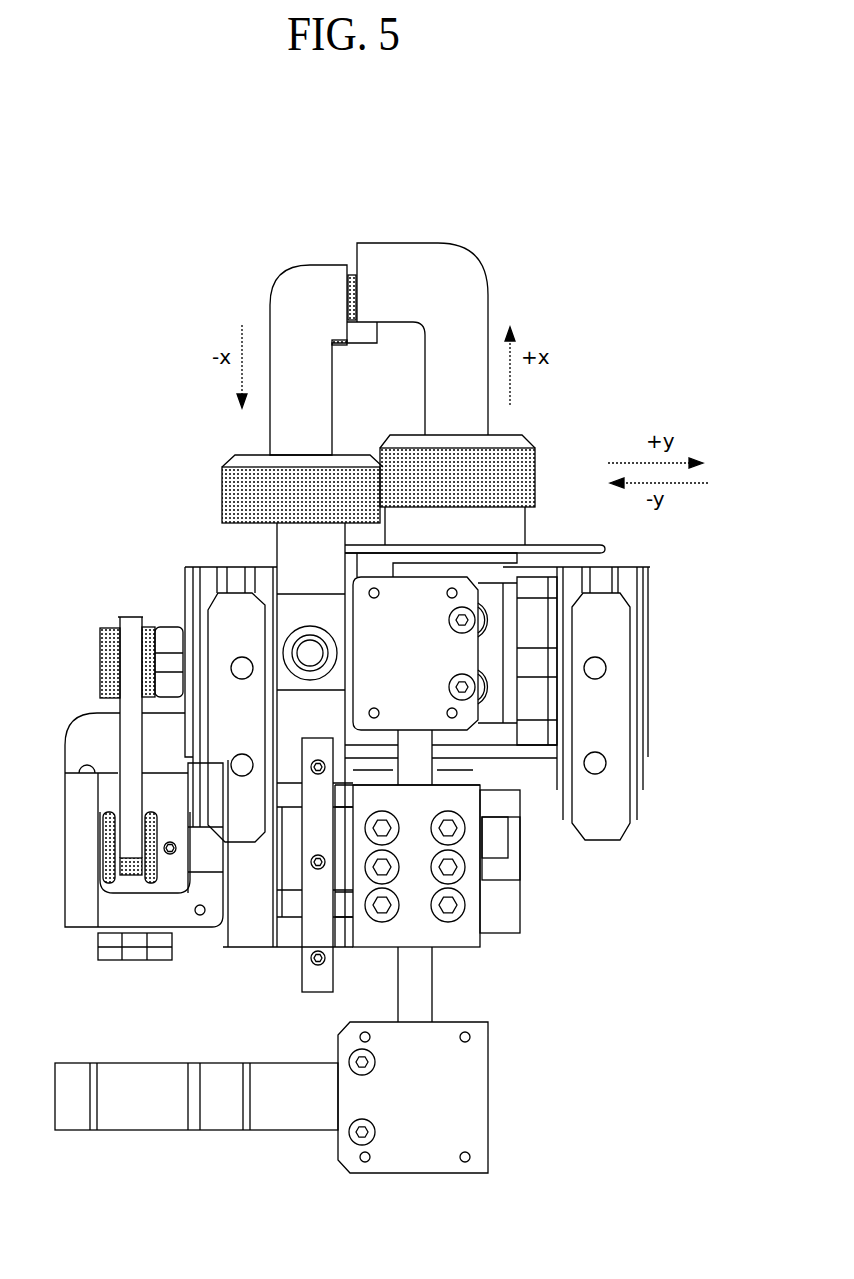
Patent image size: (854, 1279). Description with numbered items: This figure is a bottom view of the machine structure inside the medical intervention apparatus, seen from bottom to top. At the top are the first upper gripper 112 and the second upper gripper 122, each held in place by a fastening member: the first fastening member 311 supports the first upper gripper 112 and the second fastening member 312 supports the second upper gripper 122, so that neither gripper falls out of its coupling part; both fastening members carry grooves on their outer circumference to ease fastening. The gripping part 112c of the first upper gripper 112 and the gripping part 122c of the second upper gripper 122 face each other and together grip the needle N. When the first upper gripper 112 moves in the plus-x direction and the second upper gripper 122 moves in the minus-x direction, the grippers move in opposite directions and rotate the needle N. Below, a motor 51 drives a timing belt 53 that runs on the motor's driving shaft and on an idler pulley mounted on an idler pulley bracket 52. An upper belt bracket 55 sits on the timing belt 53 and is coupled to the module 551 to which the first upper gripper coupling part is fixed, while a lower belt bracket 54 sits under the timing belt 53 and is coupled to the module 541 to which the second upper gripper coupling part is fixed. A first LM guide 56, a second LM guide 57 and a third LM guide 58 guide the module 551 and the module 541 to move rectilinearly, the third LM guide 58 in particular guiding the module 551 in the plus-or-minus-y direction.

The first upper gripper 112 is at (494, 260).
The gripping part 112c is at (402, 264).
The needle N is at (347, 306).
The gripping part 122c is at (290, 300).
The second upper gripper 122 is at (255, 437).
The first fastening member 311 is at (538, 462).
The second fastening member 312 is at (222, 486).
The module 541 is at (307, 548).
The first LM guide 56 is at (223, 615).
The module 551 is at (493, 612).
The third LM guide 58 is at (628, 678).
The idler pulley bracket 52 is at (458, 660).
The upper belt bracket 55 is at (450, 775).
The lower belt bracket 54 is at (450, 928).
The second LM guide 57 is at (308, 973).
The timing belt 53 is at (418, 989).
The motor 51 is at (273, 1132).